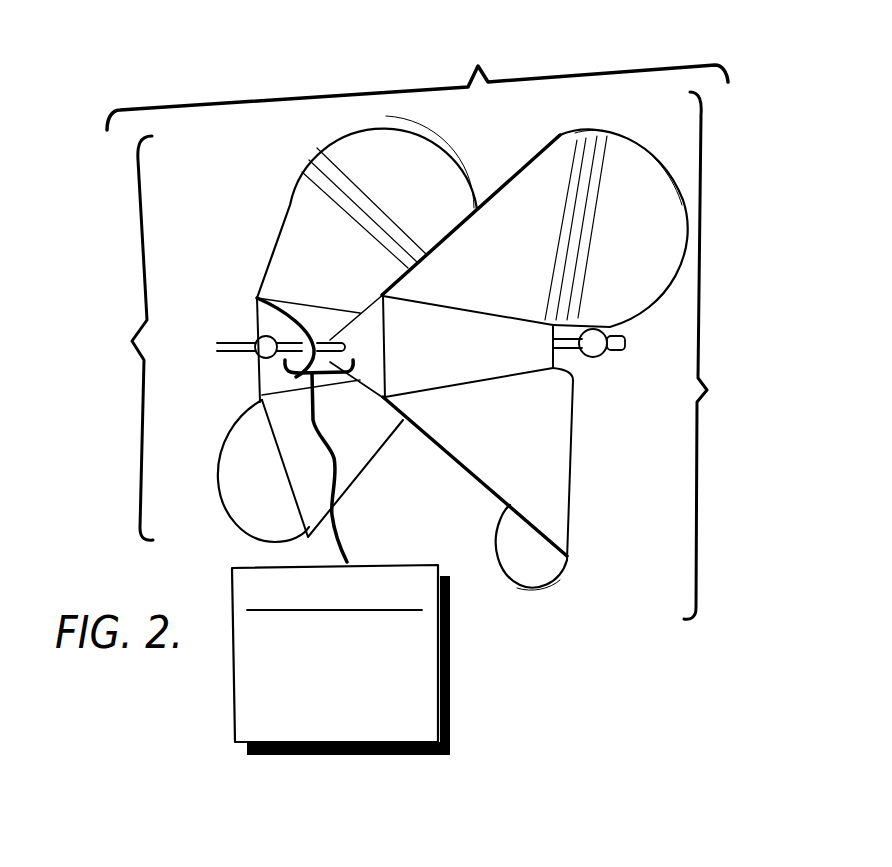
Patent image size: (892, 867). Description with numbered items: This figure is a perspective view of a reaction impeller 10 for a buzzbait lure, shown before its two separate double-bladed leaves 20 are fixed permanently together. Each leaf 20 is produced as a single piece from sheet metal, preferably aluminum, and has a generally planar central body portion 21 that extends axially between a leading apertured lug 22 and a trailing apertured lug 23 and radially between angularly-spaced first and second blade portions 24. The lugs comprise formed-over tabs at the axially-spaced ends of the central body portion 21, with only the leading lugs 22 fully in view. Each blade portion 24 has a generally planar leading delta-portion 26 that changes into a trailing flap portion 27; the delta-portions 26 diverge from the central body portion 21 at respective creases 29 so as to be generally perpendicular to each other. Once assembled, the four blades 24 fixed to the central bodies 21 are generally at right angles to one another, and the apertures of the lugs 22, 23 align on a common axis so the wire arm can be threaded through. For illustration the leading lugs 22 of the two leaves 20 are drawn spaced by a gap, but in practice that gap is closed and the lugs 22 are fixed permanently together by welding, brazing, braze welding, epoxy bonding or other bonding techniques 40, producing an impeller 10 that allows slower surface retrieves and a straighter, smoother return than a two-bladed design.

The reaction impeller 10 is at (417, 77).
The double-bladed leaf 20 is at (426, 355).
The central body portion 21 is at (316, 318).
The leading apertured lug 22 is at (273, 319).
The trailing apertured lug 23 is at (571, 366).
The blade portion 24 is at (293, 199).
The leading delta-portion 26 is at (522, 256).
The trailing flap portion 27 is at (612, 256).
The crease 29 is at (451, 393).
The bonding technique 40 is at (341, 564).